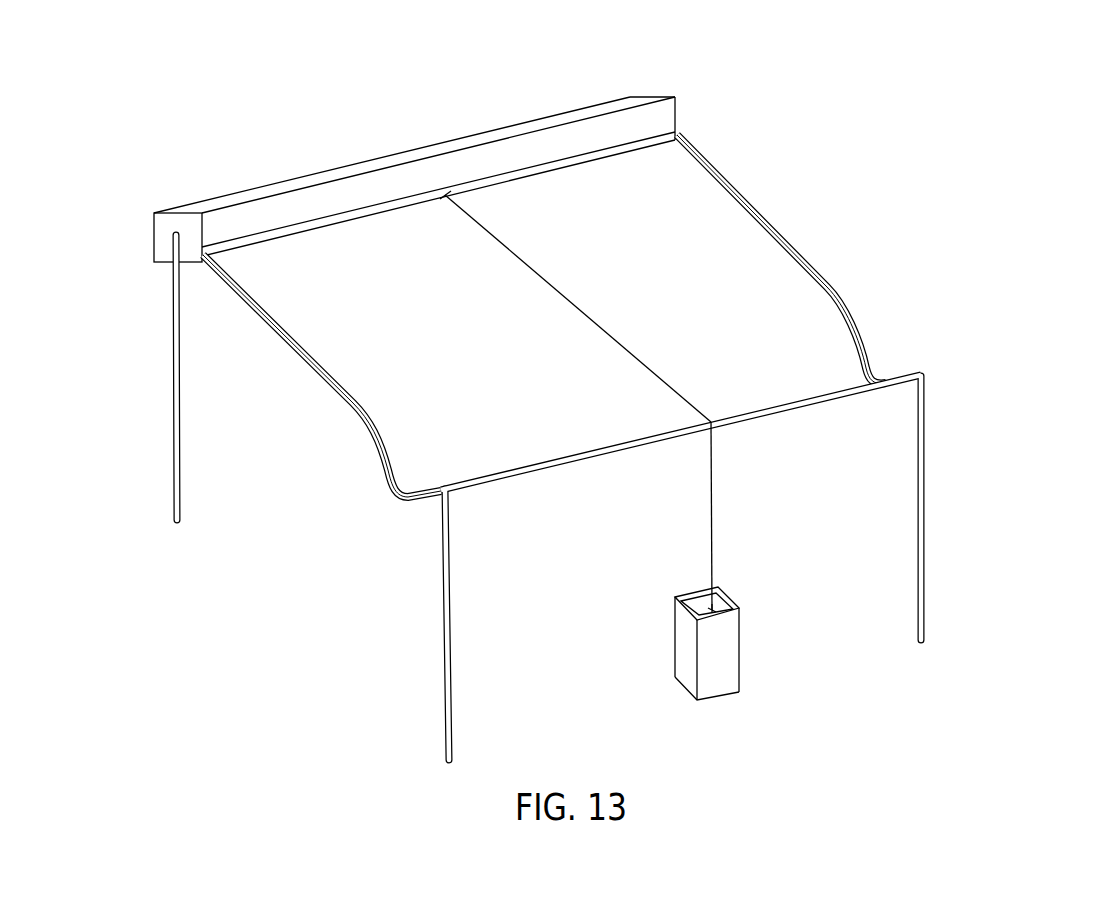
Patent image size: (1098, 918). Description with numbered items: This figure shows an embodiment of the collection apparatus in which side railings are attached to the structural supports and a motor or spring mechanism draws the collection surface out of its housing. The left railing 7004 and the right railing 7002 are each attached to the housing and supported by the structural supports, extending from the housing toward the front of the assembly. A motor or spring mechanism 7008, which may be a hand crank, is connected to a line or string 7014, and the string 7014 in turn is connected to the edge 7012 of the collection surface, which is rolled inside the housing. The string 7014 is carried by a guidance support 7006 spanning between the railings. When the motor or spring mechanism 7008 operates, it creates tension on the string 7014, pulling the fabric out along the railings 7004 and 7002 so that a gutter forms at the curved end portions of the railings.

The right railing 7002 is at (817, 224).
The left railing 7004 is at (308, 409).
The guidance support 7006 is at (799, 383).
The motor or spring mechanism 7008 is at (758, 666).
The collection surface edge 7012 is at (481, 214).
The string 7014 is at (741, 541).